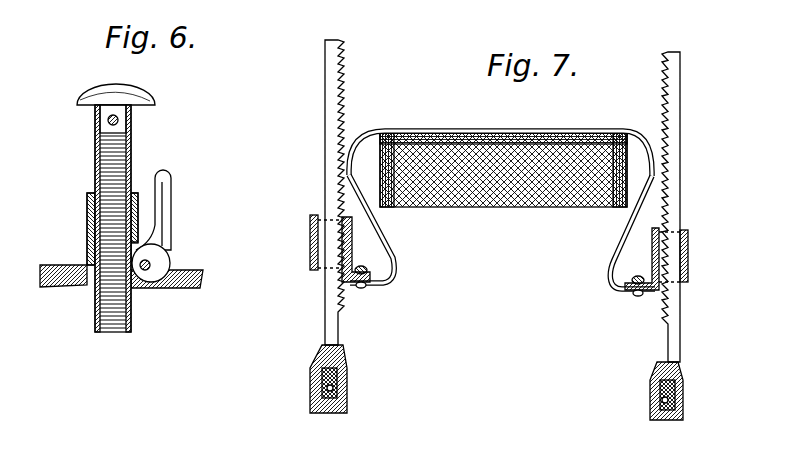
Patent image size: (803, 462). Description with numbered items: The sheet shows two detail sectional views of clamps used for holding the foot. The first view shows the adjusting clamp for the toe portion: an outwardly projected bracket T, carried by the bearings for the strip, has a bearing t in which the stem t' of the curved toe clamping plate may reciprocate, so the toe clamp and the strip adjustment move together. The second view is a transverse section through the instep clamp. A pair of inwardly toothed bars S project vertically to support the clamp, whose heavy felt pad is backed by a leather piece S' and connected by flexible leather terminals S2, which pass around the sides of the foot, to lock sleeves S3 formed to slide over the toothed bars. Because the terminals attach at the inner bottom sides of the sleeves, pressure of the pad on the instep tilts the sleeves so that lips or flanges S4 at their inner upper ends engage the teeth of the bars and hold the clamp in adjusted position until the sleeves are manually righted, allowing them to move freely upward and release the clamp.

In FIG. 6, the bracket T is at (73, 284).
In FIG. 6, the bearing t is at (99, 229).
In FIG. 6, the stem t' is at (151, 211).
In FIG. 7, the inwardly toothed bars S is at (504, 201).
In FIG. 7, the leather piece S' is at (500, 144).
In FIG. 7, the flexible leather terminals S2 is at (381, 223).
In FIG. 7, the lock sleeves S3 is at (310, 244).
In FIG. 7, the lips or flanges S4 is at (343, 219).